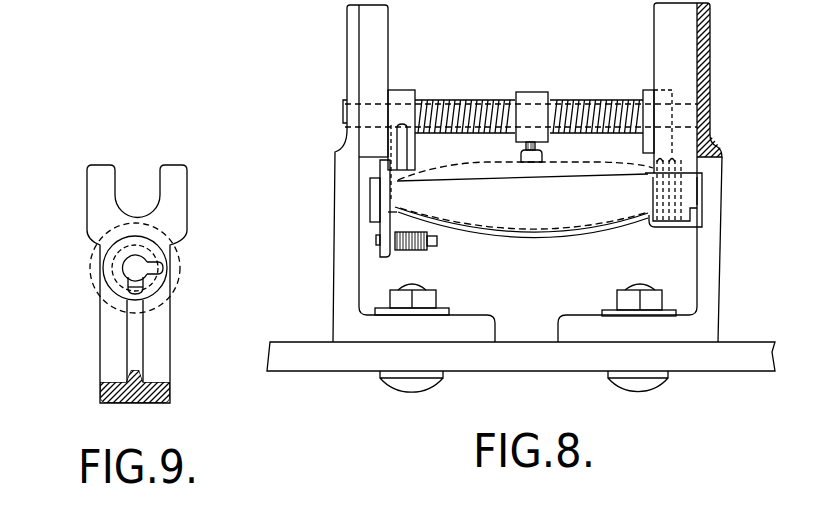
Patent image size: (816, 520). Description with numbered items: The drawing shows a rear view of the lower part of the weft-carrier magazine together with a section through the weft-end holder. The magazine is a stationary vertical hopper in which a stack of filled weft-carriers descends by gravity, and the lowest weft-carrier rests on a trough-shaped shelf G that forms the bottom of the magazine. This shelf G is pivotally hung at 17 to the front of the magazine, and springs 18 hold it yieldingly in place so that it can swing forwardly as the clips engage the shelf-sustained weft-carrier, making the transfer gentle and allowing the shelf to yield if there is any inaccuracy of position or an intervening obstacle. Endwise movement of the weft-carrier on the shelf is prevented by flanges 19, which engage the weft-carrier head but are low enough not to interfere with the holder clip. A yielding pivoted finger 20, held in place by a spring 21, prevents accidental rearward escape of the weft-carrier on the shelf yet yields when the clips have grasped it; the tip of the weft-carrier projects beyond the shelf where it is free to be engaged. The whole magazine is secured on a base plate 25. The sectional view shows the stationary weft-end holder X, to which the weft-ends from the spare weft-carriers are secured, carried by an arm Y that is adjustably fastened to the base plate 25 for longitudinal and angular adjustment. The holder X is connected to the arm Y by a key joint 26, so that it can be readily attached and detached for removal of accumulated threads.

In FIG. 8, the pivot 17 is at (713, 118).
In FIG. 8, the springs 18 is at (602, 105).
In FIG. 8, the flanges 19 is at (643, 247).
In FIG. 8, the yielding pivoted finger 20 is at (385, 192).
In FIG. 8, the spring 21 is at (418, 248).
In FIG. 8, the base plate 25 is at (720, 358).
In FIG. 8, the shelf G is at (530, 236).
In FIG. 9, the key joint 26 is at (133, 292).
In FIG. 9, the weft-end holder X is at (171, 264).
In FIG. 9, the arm Y is at (113, 349).